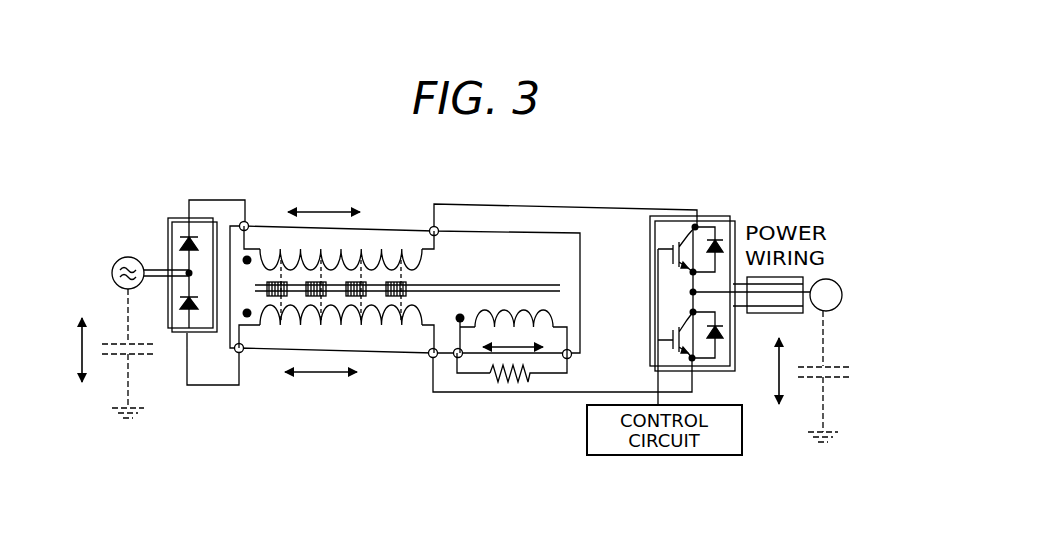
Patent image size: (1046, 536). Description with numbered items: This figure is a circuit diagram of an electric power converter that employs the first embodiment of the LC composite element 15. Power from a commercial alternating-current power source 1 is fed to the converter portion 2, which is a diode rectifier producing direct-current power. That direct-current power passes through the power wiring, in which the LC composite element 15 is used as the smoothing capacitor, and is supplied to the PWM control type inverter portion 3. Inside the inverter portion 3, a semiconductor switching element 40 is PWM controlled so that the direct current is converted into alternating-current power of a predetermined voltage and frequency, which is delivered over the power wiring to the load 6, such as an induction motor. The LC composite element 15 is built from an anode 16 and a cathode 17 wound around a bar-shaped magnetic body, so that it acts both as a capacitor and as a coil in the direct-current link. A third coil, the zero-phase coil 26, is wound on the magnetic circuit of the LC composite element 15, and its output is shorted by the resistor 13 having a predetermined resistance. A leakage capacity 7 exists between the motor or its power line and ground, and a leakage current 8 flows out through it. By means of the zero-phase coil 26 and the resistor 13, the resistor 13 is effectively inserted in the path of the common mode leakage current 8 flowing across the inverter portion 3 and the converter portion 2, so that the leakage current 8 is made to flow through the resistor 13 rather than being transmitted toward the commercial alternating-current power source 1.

The commercial alternating-current power source 1 is at (128, 257).
The converter portion 2 is at (173, 218).
The inverter portion 3 is at (730, 267).
The load 6 is at (838, 280).
The leakage capacity 7 is at (151, 353).
The leakage current 8 is at (327, 210).
The resistor 13 is at (527, 384).
The LC composite element 15 is at (403, 228).
The anode 16 is at (277, 250).
The cathode 17 is at (293, 332).
The zero-phase coil 26 is at (505, 312).
The semiconductor switching element 40 is at (677, 242).